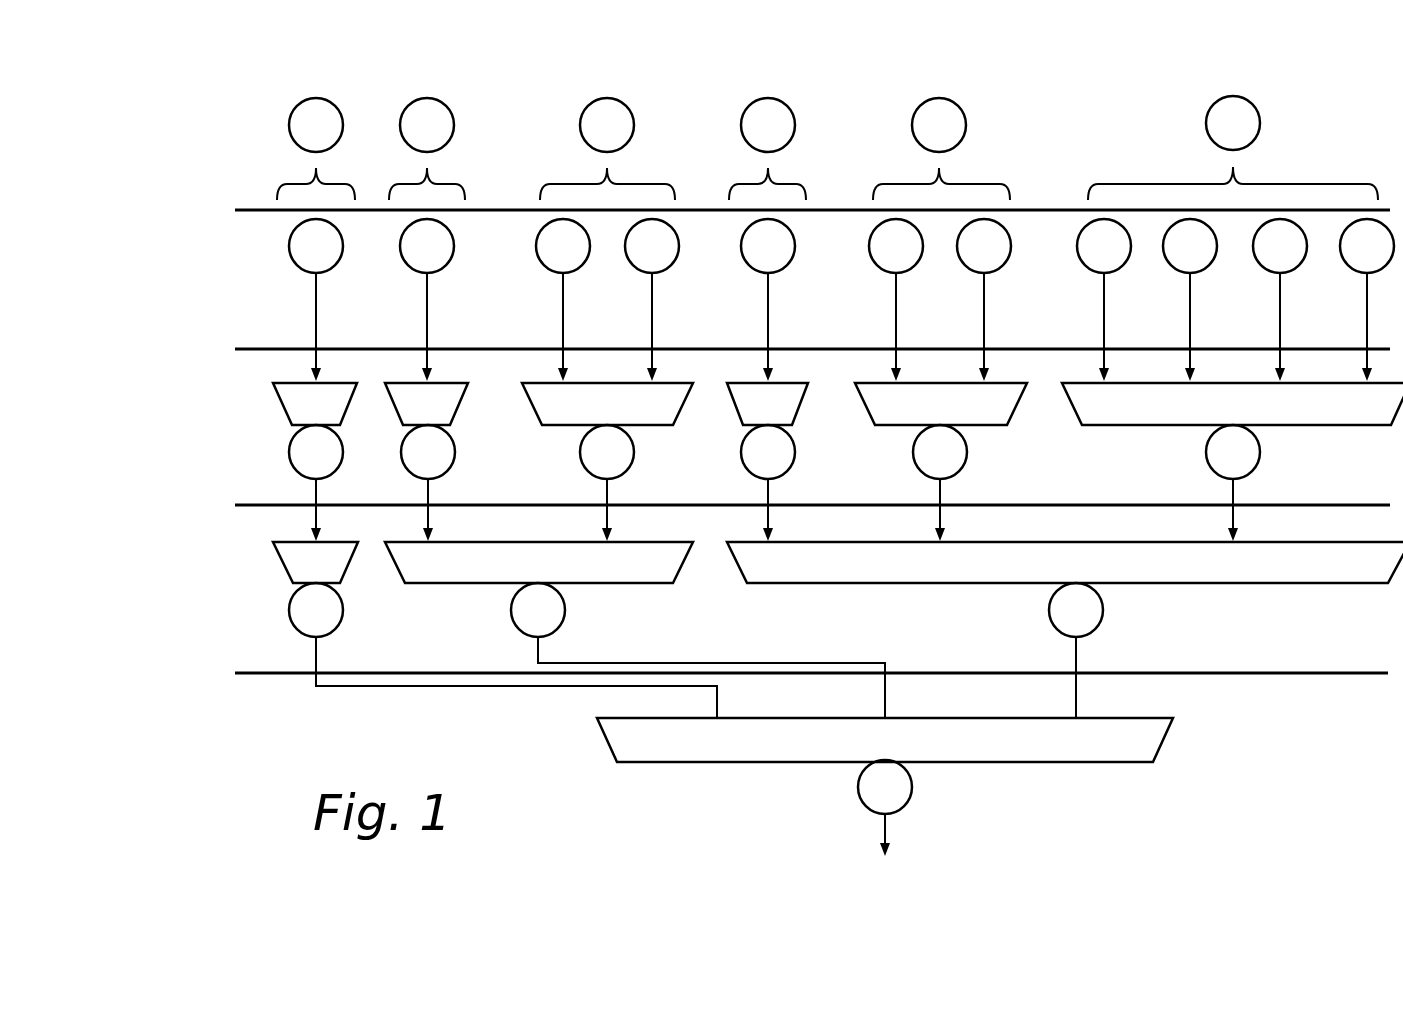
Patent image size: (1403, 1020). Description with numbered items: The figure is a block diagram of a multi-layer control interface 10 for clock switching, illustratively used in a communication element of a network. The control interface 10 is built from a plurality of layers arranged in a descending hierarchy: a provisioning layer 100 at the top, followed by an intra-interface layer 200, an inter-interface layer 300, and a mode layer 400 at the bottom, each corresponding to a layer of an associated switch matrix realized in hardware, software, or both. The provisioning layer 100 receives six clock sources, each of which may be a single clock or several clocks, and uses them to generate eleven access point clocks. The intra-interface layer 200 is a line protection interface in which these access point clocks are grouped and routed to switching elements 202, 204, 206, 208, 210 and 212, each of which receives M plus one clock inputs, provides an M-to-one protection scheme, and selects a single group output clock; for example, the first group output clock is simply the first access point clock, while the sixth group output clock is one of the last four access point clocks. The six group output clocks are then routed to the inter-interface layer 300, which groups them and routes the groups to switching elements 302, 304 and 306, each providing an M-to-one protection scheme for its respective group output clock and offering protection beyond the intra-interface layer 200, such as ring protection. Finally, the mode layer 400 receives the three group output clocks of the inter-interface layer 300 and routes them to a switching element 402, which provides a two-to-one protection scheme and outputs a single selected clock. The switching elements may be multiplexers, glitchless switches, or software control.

The multi-layer control interface 10 is at (1340, 108).
The provisioning layer 100 is at (228, 255).
The intra-interface layer 200 is at (210, 418).
The switching element 202 is at (282, 412).
The switching element 204 is at (460, 405).
The switching element 206 is at (687, 407).
The switching element 208 is at (800, 403).
The switching element 210 is at (1020, 403).
The switching element 212 is at (1335, 427).
The inter-interface layer 300 is at (212, 570).
The switching element 302 is at (347, 567).
The switching element 304 is at (687, 563).
The switching element 306 is at (1253, 583).
The mode layer 400 is at (197, 728).
The switching element 402 is at (603, 742).